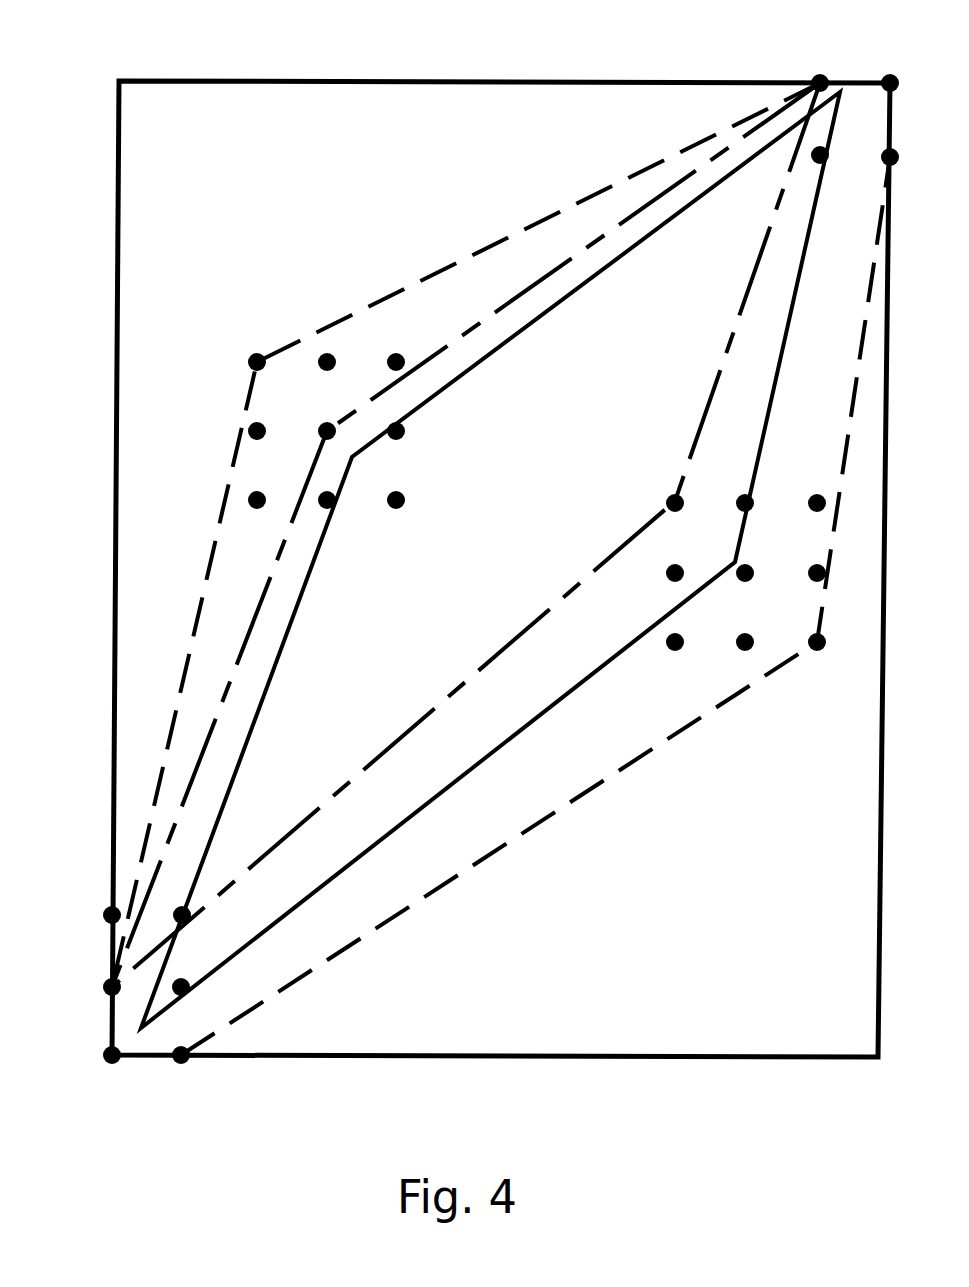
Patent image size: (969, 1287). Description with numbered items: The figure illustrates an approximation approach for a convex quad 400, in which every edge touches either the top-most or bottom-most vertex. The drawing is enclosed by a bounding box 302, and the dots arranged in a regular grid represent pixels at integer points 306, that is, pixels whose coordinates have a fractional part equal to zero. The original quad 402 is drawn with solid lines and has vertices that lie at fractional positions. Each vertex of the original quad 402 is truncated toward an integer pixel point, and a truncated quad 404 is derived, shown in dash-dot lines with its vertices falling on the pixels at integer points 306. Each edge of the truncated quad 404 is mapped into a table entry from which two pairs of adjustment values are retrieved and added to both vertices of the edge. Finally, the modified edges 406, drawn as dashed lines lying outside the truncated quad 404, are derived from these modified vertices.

The convex quad 400 is at (140, 59).
The bounding box 302 is at (570, 1058).
The pixels at integer points 306 is at (108, 988).
The original quad 402 is at (530, 726).
The truncated quad 404 is at (527, 628).
The modified edges 406 is at (442, 884).